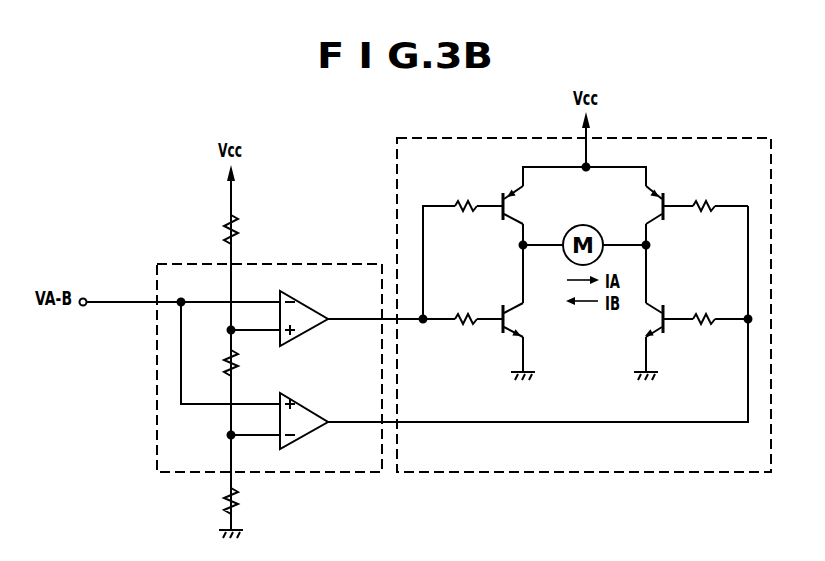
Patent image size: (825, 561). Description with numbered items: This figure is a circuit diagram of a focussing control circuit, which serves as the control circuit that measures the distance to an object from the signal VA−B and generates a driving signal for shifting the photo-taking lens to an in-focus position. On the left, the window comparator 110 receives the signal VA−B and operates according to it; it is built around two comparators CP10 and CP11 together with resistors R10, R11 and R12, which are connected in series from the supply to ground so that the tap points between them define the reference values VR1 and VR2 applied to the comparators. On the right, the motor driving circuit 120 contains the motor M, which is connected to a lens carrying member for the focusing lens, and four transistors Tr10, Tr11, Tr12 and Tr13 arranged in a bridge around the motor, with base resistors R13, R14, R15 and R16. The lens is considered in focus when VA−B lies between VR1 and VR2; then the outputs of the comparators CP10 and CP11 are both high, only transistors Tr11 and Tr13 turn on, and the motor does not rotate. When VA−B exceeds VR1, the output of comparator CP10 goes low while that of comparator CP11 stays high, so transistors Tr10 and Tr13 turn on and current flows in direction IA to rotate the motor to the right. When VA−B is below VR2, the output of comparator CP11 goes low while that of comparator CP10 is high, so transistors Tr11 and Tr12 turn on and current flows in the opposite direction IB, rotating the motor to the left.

The window comparator 110 is at (331, 262).
The motor driving circuit 120 is at (697, 137).
The resistor R10 is at (224, 233).
The variable resistor R11 is at (223, 360).
The resistor R12 is at (240, 508).
The resistor R13 is at (466, 213).
The resistor R14 is at (468, 326).
The resistor R15 is at (703, 213).
The resistor R16 is at (706, 326).
The reference value VR1 is at (238, 338).
The reference value VR2 is at (222, 438).
The comparator CP10 is at (306, 300).
The comparator CP11 is at (306, 441).
The transistor Tr10 is at (515, 205).
The transistor Tr11 is at (515, 318).
The transistor Tr12 is at (655, 205).
The transistor Tr13 is at (652, 321).